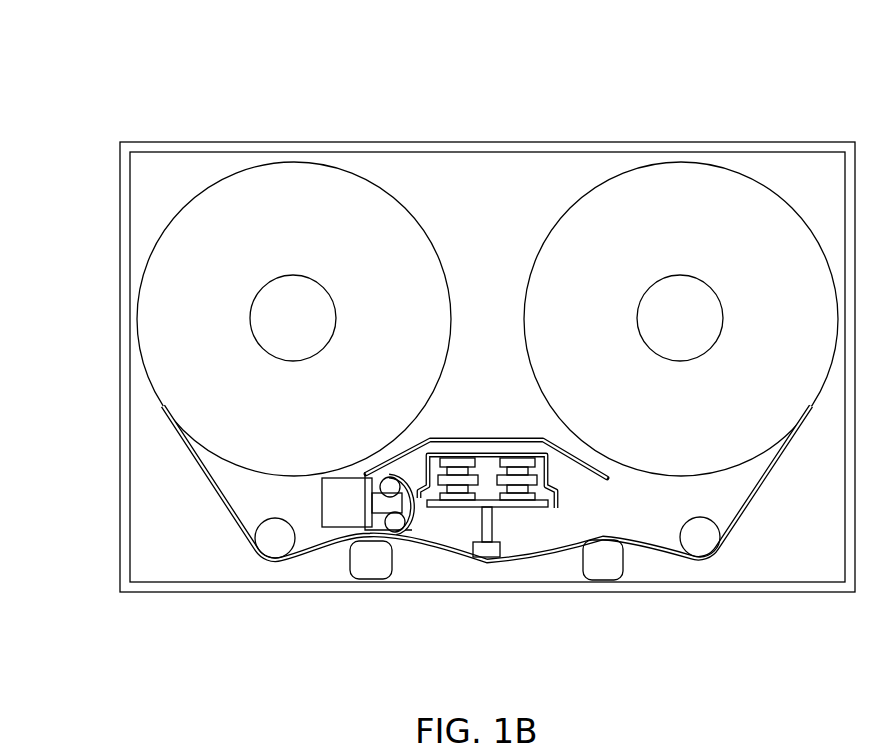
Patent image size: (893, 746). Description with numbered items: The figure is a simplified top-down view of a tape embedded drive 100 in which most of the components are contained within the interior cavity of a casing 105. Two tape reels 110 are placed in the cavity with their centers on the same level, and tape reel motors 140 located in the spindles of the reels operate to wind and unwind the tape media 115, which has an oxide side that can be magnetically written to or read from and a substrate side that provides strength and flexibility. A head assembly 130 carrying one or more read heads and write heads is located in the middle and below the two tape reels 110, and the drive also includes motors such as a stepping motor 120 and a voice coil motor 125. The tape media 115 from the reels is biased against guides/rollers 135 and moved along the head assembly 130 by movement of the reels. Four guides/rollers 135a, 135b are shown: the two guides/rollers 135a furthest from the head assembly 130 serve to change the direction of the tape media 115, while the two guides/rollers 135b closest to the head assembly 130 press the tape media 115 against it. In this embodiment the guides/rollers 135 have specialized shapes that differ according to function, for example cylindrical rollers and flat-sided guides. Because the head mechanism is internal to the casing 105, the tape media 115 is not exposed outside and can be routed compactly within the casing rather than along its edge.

The tape embedded drive 100 is at (116, 72).
The casing 105 is at (518, 142).
The tape reels 110 is at (278, 162).
The tape media 115 is at (220, 500).
The stepping motor 120 is at (330, 527).
The voice coil motor 125 is at (460, 508).
The head assembly 130 is at (487, 557).
The guides/rollers 135 is at (275, 538).
The guides/rollers 135a is at (705, 545).
The guides/rollers 135b is at (372, 566).
The tape reel motors 140 is at (326, 289).